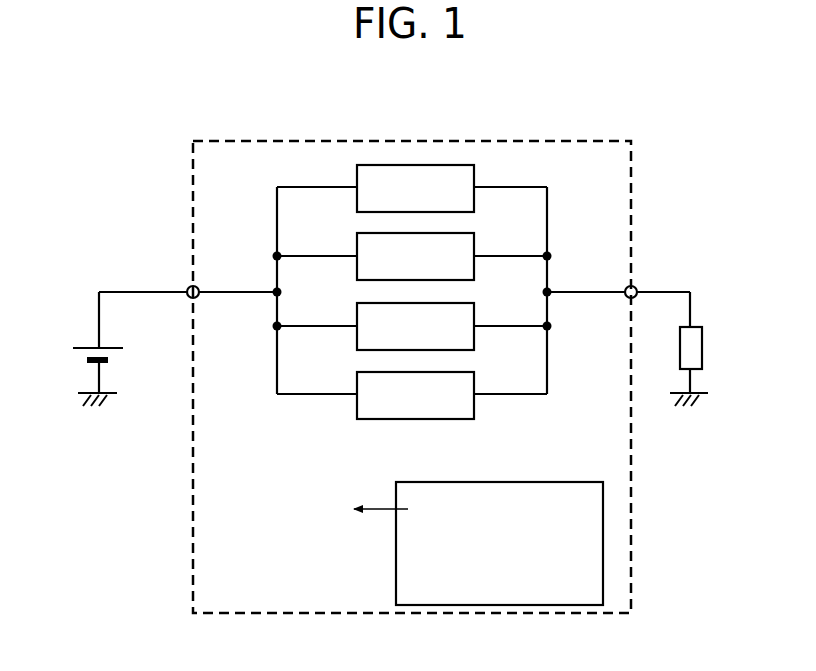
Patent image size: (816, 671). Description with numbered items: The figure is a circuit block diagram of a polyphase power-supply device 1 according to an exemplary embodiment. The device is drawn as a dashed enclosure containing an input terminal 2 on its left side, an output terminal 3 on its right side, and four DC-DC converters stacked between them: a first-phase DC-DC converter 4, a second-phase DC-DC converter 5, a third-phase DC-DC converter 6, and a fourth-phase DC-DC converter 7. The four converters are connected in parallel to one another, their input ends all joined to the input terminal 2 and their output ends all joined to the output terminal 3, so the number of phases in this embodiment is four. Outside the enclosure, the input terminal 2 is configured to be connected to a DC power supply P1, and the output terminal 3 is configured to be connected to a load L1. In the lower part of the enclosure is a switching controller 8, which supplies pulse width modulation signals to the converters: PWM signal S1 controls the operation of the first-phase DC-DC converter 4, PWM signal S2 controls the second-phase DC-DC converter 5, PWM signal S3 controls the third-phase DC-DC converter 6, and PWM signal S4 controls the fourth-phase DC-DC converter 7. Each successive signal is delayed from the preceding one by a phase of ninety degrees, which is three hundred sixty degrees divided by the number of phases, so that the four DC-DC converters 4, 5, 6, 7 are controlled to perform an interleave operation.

The polyphase power-supply device 1 is at (585, 141).
The input terminal 2 is at (187, 289).
The output terminal 3 is at (639, 290).
The first-phase DC-DC converter 4 is at (355, 194).
The second-phase DC-DC converter 5 is at (355, 263).
The third-phase DC-DC converter 6 is at (355, 332).
The fourth-phase DC-DC converter 7 is at (355, 401).
The switching controller 8 is at (603, 557).
The DC power supply P1 is at (79, 352).
The load L1 is at (699, 353).
The PWM signal S1 is at (478, 208).
The PWM signal S2 is at (478, 278).
The PWM signal S3 is at (478, 346).
The PWM signal S4 is at (478, 415).